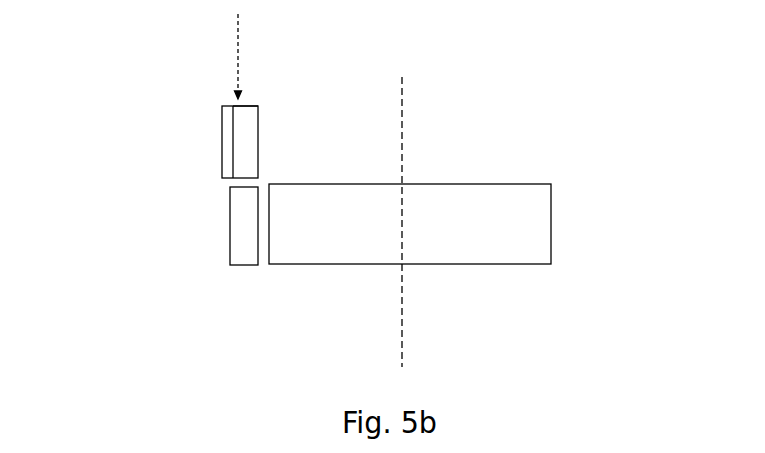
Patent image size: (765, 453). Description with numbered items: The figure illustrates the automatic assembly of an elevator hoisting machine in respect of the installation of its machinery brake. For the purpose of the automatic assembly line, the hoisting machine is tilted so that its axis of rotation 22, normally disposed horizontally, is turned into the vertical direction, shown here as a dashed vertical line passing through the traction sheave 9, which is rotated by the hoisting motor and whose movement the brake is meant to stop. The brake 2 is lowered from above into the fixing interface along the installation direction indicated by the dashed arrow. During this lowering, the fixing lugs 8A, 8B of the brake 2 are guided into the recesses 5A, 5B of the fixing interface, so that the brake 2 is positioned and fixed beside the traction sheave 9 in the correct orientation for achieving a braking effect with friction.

The brake 2 is at (227, 142).
The fixing lug 8A is at (289, 78).
The fixing lug 8B is at (245, 143).
The axis of rotation 22 is at (403, 129).
The traction sheave 9 is at (510, 223).
The recess 5A is at (148, 227).
The recess 5B is at (230, 233).